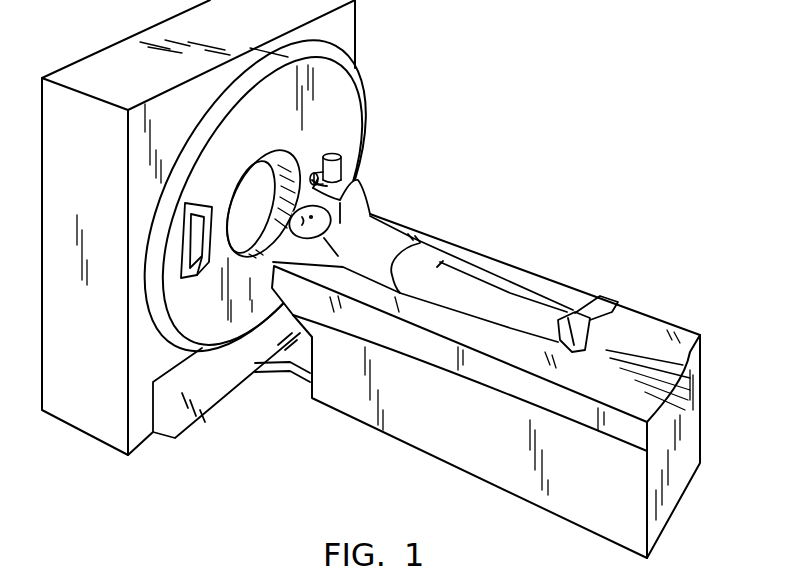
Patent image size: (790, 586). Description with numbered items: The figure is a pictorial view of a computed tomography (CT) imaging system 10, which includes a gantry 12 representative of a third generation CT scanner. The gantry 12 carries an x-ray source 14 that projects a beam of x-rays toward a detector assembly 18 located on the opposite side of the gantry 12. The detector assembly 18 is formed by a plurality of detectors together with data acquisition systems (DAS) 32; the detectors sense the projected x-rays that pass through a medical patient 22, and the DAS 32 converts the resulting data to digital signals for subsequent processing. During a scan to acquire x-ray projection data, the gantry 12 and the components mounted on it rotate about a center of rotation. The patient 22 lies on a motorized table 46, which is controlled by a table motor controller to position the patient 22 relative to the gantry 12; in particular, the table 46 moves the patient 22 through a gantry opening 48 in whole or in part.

The CT imaging system 10 is at (514, 160).
The gantry 12 is at (361, 131).
The x-ray source 14 is at (342, 176).
The detector assembly 18 is at (194, 280).
The medical patient 22 is at (380, 230).
The data acquisition systems (DAS) 32 is at (211, 211).
The motorized table 46 is at (457, 451).
The gantry opening 48 is at (249, 188).